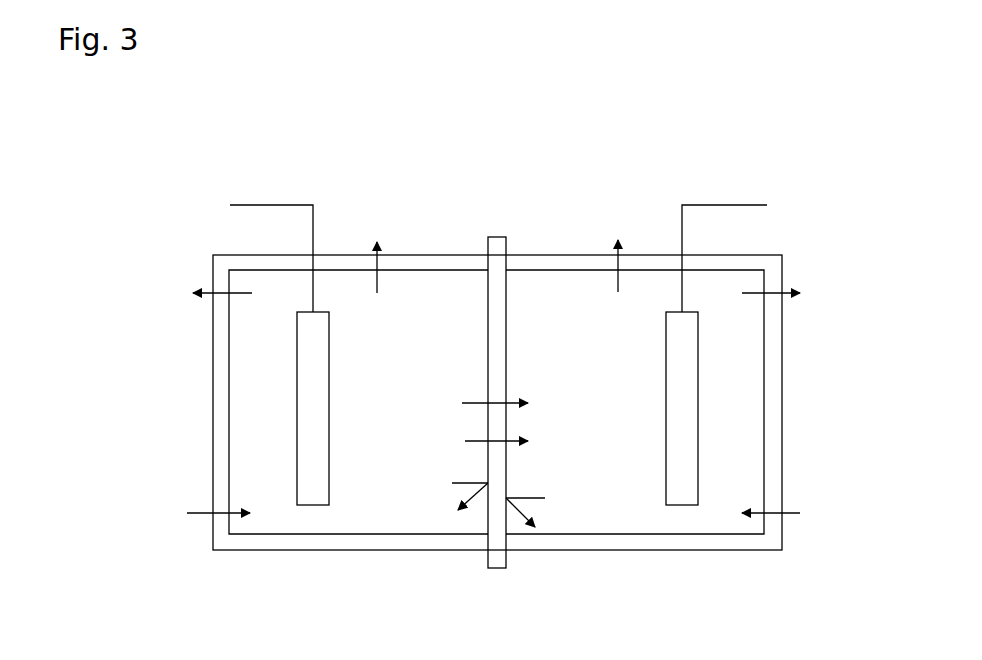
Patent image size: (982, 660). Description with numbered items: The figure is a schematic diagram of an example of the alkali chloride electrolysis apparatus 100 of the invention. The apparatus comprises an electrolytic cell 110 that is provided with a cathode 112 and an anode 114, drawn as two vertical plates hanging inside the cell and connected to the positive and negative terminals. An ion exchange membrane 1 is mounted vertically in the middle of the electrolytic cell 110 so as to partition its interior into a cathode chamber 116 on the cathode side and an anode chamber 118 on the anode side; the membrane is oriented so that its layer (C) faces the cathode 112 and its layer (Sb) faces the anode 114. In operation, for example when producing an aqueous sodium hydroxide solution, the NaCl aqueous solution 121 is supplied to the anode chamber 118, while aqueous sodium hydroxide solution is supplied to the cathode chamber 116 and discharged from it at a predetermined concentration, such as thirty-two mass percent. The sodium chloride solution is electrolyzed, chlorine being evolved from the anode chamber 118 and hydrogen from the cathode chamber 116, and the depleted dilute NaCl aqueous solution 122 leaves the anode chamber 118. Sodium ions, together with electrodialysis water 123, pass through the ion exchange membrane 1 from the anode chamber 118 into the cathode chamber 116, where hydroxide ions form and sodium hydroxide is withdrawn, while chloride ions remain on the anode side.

The alkali chloride electrolysis apparatus 100 is at (425, 178).
The ion exchange membrane 1 is at (495, 232).
The electrolytic cell 110 is at (295, 551).
The cathode 112 is at (698, 383).
The anode 114 is at (297, 395).
The cathode chamber 116 is at (635, 517).
The anode chamber 118 is at (397, 517).
The NaCl aqueous solution 121 is at (199, 513).
The dilute NaCl aqueous solution 122 is at (200, 293).
The electrodialysis water 123 is at (475, 403).